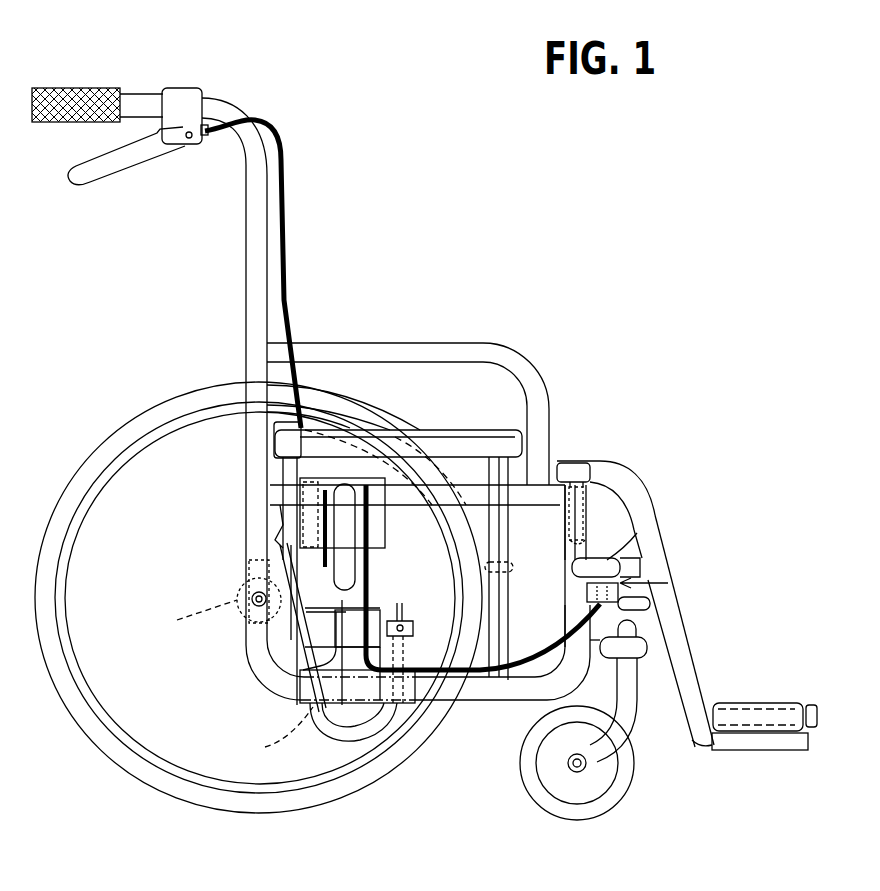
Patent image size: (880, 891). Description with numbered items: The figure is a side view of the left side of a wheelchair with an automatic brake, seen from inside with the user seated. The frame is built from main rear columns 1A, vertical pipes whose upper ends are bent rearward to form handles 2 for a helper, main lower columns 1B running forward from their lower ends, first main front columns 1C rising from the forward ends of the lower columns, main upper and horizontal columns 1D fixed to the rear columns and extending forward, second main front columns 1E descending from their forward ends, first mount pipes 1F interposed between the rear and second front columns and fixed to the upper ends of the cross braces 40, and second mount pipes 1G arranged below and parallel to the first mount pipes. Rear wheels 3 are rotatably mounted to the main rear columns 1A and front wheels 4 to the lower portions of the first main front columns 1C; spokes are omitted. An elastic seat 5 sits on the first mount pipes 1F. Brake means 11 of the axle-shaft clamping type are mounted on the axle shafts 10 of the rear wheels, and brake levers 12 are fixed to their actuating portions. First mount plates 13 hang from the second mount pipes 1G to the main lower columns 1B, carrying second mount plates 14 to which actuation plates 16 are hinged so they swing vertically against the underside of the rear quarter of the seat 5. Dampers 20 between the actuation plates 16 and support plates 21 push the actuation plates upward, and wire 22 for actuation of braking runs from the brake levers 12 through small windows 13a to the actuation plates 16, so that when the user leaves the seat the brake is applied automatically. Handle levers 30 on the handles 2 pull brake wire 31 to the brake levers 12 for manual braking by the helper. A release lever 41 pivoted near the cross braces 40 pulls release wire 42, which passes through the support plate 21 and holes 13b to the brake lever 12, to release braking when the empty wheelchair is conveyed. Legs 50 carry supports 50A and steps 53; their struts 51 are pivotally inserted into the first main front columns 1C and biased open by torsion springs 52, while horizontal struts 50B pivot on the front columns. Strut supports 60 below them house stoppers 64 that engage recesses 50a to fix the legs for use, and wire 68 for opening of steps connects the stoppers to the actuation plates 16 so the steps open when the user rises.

The main rear columns 1A is at (247, 240).
The main lower columns 1B is at (497, 703).
The first main front columns 1C is at (580, 547).
The main upper and horizontal columns 1D is at (366, 350).
The second main front columns 1E is at (545, 432).
The first mount pipes 1F is at (535, 440).
The second mount pipes 1G is at (530, 500).
The handles 2 is at (77, 90).
The rear wheels 3 is at (190, 797).
The front wheels 4 is at (583, 808).
The seat 5 is at (451, 430).
The axle shafts 10 is at (250, 614).
The brake means 11 is at (250, 598).
The brake levers 12 is at (410, 636).
The first mount plates 13 is at (300, 634).
The small windows 13a is at (181, 619).
The holes 13b is at (264, 735).
The second mount plates 14 is at (280, 508).
The actuation plates 16 is at (272, 441).
The dampers 20 is at (346, 541).
The support plates 21 is at (334, 704).
The wire for actuation of braking 22 is at (300, 493).
The handle levers 30 is at (117, 162).
The brake wire 31 is at (291, 245).
The cross braces 40 is at (292, 672).
The release lever 41 is at (270, 522).
The release wire 42 is at (372, 736).
The legs 50 is at (644, 510).
The supports 50A is at (810, 708).
The horizontal struts 50B is at (641, 560).
The recesses 50a is at (622, 562).
The struts 51 is at (576, 480).
The torsion springs 52 is at (588, 507).
The steps 53 is at (766, 740).
The strut supports 60 is at (650, 610).
The stoppers 64 is at (667, 578).
The wire for opening of steps 68 is at (369, 592).